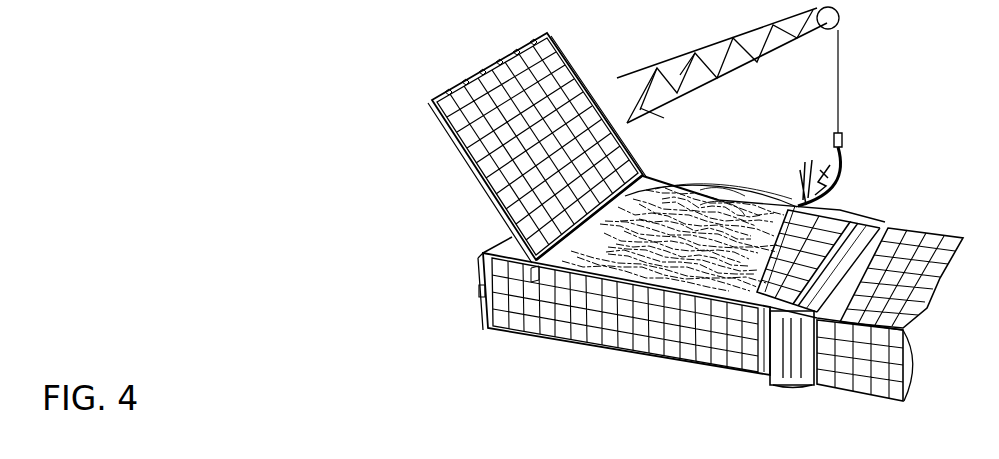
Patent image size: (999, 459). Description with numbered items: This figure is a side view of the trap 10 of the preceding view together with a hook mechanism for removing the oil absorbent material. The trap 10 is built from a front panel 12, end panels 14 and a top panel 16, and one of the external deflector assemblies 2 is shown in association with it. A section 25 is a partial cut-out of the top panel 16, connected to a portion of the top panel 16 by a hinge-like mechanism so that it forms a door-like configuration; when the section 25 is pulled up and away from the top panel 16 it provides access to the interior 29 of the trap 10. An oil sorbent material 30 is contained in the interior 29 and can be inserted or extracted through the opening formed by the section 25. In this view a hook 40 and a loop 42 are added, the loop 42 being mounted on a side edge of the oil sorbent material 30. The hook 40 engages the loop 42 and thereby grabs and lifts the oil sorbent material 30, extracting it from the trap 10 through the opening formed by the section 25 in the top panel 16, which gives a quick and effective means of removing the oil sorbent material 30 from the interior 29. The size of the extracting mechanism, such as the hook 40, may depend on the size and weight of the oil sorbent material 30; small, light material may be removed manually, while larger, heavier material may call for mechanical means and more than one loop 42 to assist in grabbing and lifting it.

The external deflector assembly 2 is at (779, 402).
The trap 10 is at (313, 230).
The front panel 12 is at (523, 346).
The end panel 14 is at (479, 297).
The top panel 16 is at (867, 218).
The section 25 is at (446, 130).
The interior 29 is at (745, 280).
The oil sorbent material 30 is at (772, 182).
The hook 40 is at (836, 138).
The loop 42 is at (843, 174).